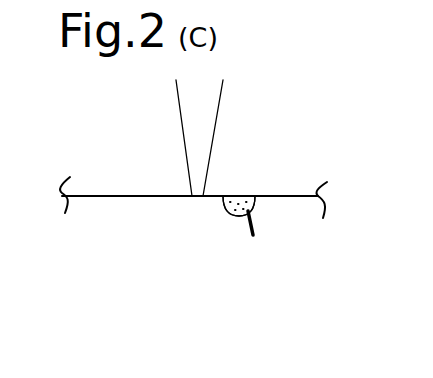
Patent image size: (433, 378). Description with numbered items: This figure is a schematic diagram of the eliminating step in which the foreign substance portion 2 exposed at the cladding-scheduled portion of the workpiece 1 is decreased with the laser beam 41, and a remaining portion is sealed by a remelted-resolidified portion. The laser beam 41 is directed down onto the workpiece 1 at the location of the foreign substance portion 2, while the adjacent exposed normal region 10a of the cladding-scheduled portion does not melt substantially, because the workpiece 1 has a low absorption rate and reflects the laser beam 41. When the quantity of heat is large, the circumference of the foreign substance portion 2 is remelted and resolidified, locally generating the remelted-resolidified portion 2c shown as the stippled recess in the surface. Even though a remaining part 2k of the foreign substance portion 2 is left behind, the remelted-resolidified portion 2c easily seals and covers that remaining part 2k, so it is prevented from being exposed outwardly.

The workpiece 1 is at (303, 196).
The normal region 10a is at (283, 196).
The laser beam 41 is at (187, 120).
The foreign substance portion 2 is at (247, 213).
The remelted-resolidified portion 2c is at (255, 205).
The remaining part 2k is at (255, 230).